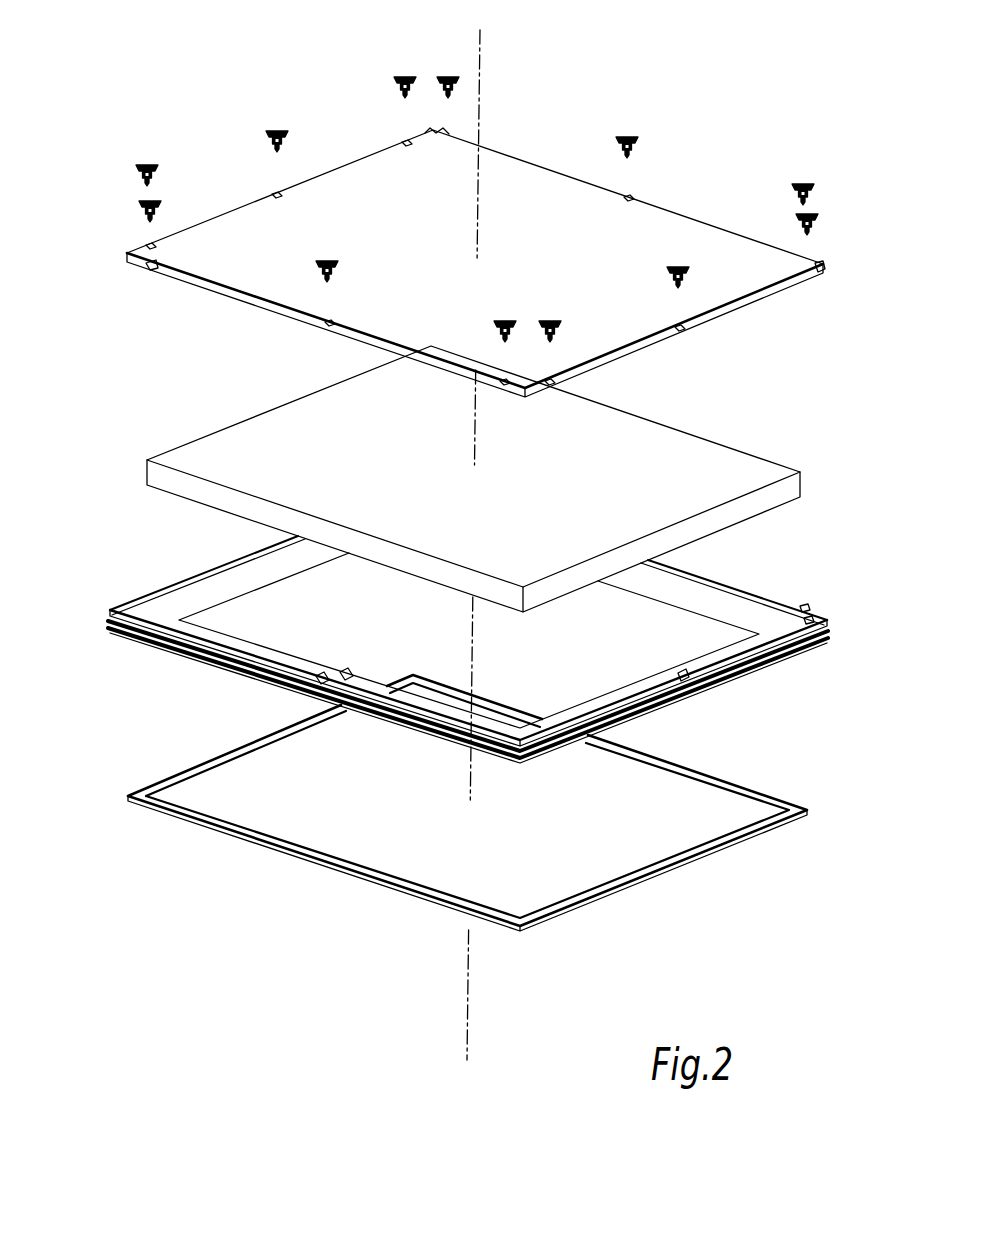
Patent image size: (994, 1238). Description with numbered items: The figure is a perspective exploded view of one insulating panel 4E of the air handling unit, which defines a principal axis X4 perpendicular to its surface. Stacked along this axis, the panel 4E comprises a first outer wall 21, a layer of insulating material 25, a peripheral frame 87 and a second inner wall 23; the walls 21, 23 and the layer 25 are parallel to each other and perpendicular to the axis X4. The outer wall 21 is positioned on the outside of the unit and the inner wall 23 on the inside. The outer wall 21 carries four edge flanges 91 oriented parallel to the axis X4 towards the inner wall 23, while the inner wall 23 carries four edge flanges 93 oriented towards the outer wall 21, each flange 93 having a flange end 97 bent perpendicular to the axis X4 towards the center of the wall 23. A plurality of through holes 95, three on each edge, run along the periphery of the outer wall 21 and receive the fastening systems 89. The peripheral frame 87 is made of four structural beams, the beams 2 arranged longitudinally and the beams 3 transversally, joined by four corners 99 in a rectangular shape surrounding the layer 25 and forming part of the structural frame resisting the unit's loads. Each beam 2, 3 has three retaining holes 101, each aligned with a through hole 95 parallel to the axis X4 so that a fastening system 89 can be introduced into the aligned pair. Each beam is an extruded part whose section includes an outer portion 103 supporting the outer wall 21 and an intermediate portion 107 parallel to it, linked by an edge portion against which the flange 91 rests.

The structural beam 2 is at (233, 570).
The structural beam 3 is at (205, 650).
The first outer wall 21 is at (265, 274).
The second inner wall 23 is at (428, 843).
The layer of insulating material 25 is at (800, 490).
The peripheral frame 87 is at (178, 580).
The fastening system 89 is at (402, 79).
The edge flange 91 is at (162, 277).
The edge flange 93 is at (600, 897).
The through hole 95 is at (683, 322).
The flange end 97 is at (647, 866).
The corner 99 is at (528, 765).
The retaining hole 101 is at (318, 668).
The outer portion 103 is at (344, 670).
The intermediate portion 107 is at (383, 735).
The panel 4E is at (155, 850).
The principal axis X4 is at (483, 535).